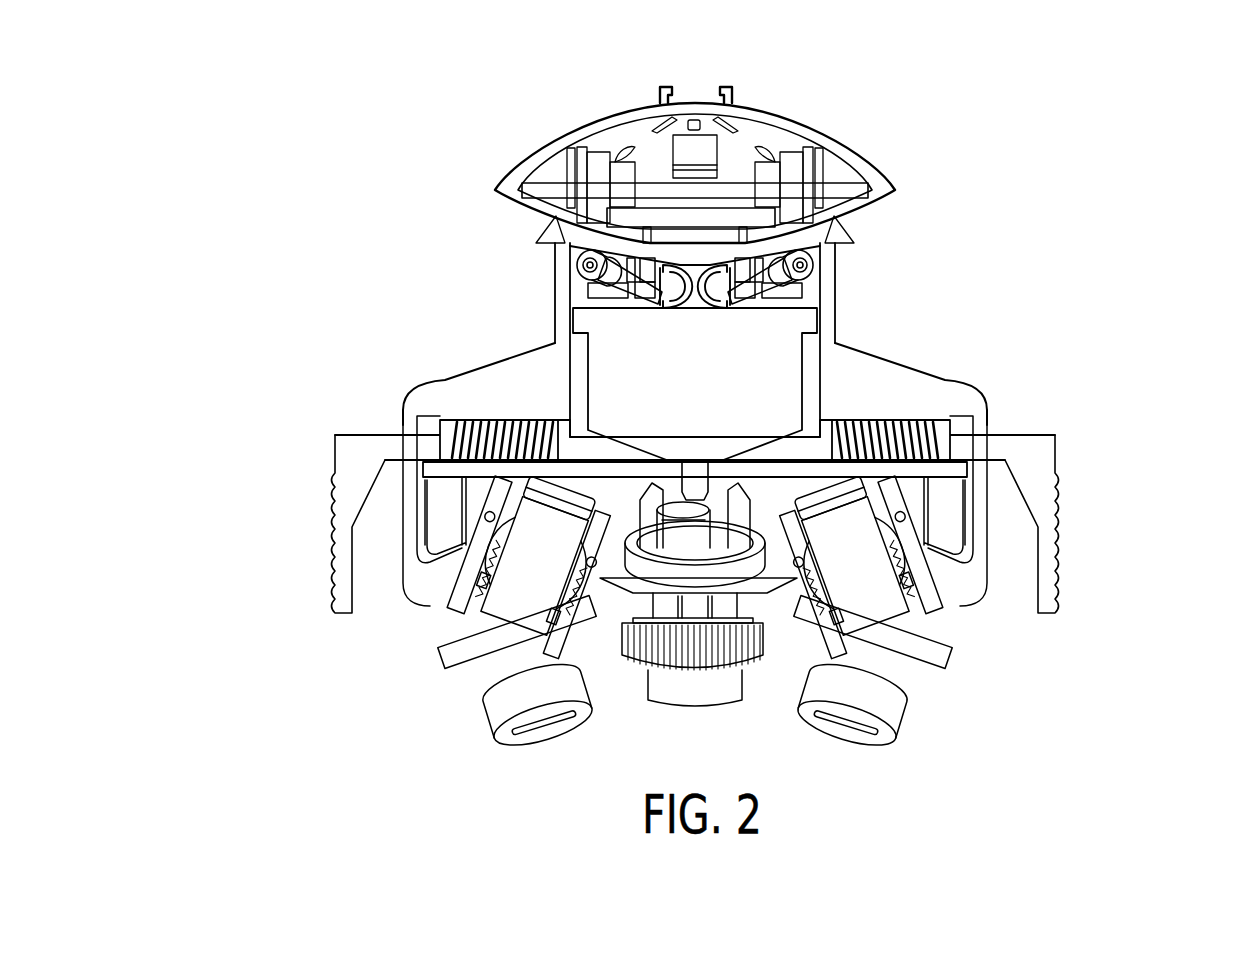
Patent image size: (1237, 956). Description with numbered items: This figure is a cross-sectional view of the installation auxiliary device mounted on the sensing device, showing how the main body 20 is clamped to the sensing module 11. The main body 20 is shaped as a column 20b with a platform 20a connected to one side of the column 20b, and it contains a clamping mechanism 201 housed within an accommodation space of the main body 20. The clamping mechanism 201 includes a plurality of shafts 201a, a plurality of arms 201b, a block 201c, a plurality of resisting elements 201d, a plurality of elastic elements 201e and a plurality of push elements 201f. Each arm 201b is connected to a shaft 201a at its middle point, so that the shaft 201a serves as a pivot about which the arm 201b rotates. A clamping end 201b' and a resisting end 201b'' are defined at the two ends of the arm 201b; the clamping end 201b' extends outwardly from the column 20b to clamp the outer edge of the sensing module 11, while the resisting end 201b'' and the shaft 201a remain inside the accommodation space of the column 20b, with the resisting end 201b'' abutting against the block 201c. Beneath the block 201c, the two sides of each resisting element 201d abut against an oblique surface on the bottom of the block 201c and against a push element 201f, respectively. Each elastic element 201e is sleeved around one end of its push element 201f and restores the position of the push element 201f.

The sensing module 11 is at (760, 135).
The main body 20 is at (290, 283).
The platform 20a is at (473, 402).
The column 20b is at (564, 313).
The clamping mechanism 201 is at (1048, 222).
The shaft 201a is at (802, 280).
The arm 201b is at (786, 299).
The clamping end 201b' is at (759, 241).
The resisting end 201b'' is at (835, 318).
The block 201c is at (732, 410).
The resisting element 201d is at (790, 436).
The elastic element 201e is at (790, 453).
The push element 201f is at (1032, 490).